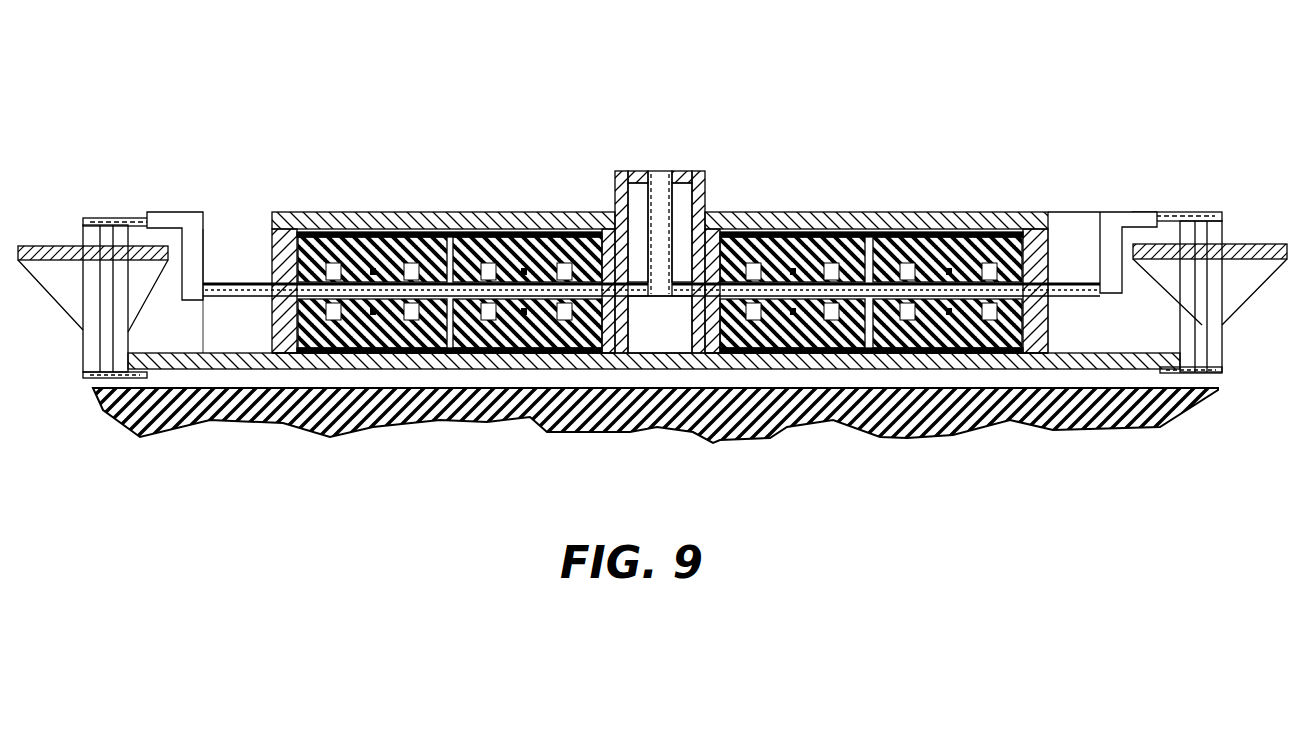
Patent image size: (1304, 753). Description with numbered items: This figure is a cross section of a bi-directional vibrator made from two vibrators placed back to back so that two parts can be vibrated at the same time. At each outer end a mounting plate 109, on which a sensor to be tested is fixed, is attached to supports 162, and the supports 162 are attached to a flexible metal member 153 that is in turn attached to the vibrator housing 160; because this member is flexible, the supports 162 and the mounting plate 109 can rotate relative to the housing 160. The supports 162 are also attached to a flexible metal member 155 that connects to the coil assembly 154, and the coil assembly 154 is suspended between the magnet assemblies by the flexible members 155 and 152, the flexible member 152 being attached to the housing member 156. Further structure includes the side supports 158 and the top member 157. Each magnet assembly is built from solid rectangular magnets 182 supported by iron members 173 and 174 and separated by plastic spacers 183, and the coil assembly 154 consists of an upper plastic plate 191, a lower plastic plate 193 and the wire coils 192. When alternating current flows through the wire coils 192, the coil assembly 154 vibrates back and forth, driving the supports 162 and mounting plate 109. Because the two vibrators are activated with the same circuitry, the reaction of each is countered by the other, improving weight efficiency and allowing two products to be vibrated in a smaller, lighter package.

The mounting plate 109 is at (43, 222).
The flexible member 152 is at (657, 171).
The flexible metal member 153 is at (110, 378).
The coil assembly 154 is at (194, 213).
The flexible metal member 155 is at (137, 215).
The housing member 156 is at (682, 171).
The top member 157 is at (500, 236).
The side support 158 is at (238, 235).
The vibrator housing 160 is at (225, 368).
The supports 162 is at (93, 285).
The iron member 173 is at (288, 250).
The iron member 174 is at (283, 355).
The solid rectangular magnets 182 is at (345, 348).
The plastic spacers 183 is at (453, 348).
The upper plastic plate 191 is at (632, 283).
The wire coils 192 is at (375, 232).
The lower plastic plate 193 is at (635, 357).